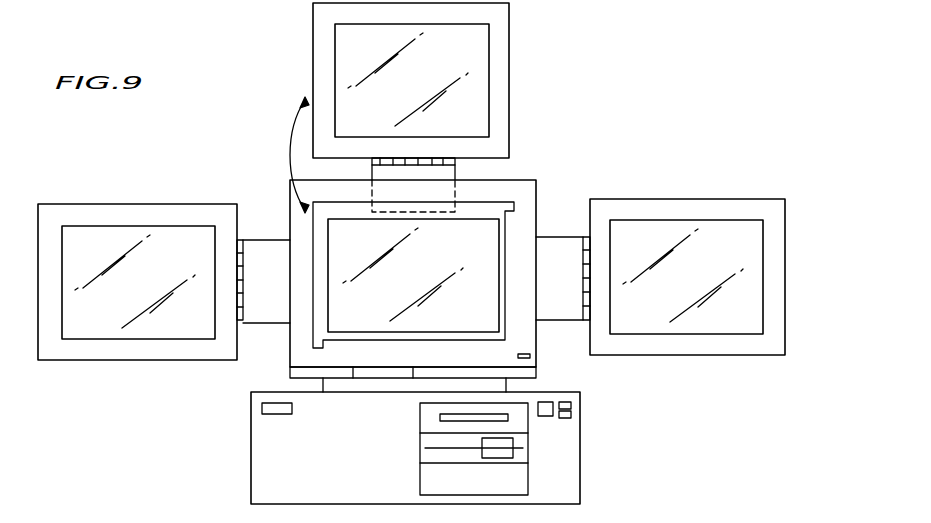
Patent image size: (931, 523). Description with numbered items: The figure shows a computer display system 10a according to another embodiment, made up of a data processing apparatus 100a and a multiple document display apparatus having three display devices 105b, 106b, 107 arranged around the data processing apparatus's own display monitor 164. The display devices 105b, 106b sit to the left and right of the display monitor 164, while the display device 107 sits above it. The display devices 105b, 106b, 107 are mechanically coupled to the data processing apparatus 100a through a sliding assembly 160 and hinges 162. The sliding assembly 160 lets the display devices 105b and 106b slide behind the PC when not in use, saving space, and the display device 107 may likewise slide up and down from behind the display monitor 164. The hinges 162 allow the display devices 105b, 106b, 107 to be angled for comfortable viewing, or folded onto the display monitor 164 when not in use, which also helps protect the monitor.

The display device 107 is at (510, 44).
The hinges 162 is at (238, 240).
The sliding assembly 160 is at (273, 247).
The display monitor 164 is at (477, 313).
The display device 105b is at (108, 361).
The display device 106b is at (720, 355).
The data processing apparatus 100a is at (627, 412).
The computer display system 10a is at (90, 504).